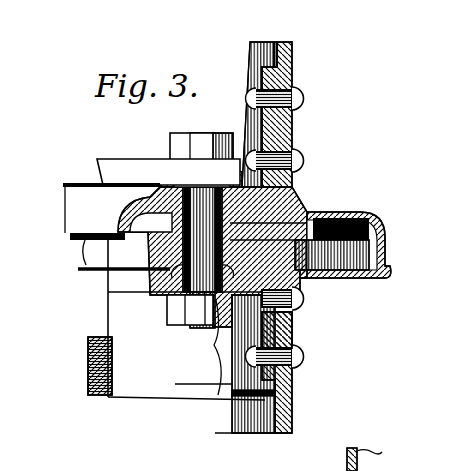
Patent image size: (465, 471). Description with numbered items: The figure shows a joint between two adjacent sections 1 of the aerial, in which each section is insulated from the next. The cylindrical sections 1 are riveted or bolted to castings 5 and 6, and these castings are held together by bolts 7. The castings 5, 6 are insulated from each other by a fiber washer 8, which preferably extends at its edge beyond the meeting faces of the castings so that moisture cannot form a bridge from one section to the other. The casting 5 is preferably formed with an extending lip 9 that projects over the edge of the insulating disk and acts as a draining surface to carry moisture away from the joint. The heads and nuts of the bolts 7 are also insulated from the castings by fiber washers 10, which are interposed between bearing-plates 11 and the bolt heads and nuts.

The section 1 is at (290, 126).
The casting 5 is at (268, 214).
The casting 6 is at (288, 331).
The bolt 7 is at (300, 298).
The fiber washer 8 is at (358, 252).
The extending lip 9 is at (374, 251).
The fiber washer 10 is at (100, 177).
The bearing-plate 11 is at (150, 163).